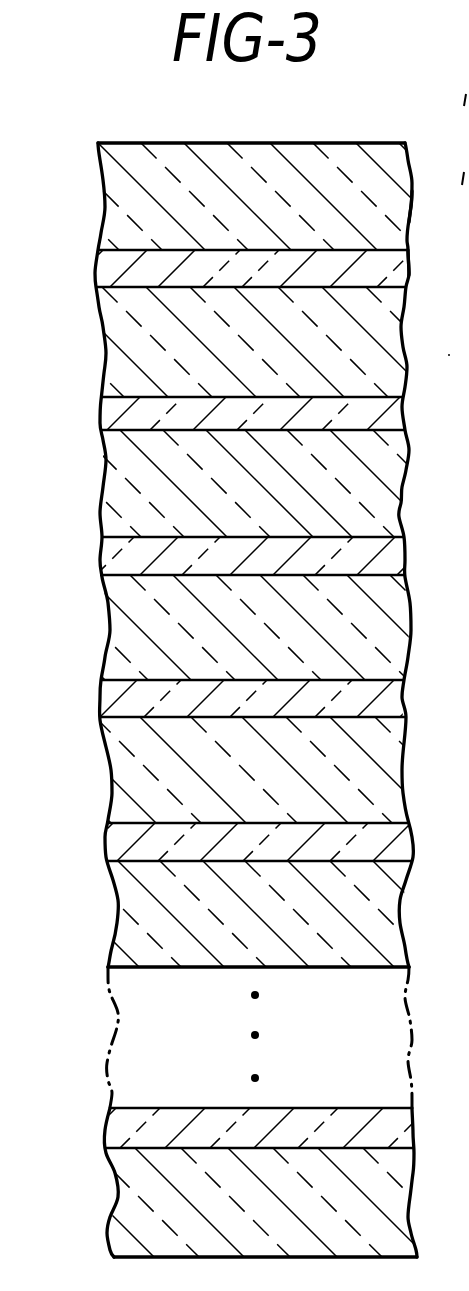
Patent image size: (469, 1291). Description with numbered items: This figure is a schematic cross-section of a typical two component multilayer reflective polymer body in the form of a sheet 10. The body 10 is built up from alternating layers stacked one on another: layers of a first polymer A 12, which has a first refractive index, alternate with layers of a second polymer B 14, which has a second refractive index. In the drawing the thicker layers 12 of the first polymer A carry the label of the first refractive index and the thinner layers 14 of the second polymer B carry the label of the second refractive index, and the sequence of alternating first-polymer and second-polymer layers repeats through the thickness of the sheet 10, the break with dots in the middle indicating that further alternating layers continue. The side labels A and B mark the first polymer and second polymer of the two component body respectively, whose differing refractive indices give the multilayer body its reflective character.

The sheet 10 is at (234, 651).
The layer of first polymer 12 is at (104, 175).
The layer of second polymer 14 is at (104, 268).
The first polymer A is at (409, 219).
The second polymer B is at (409, 274).